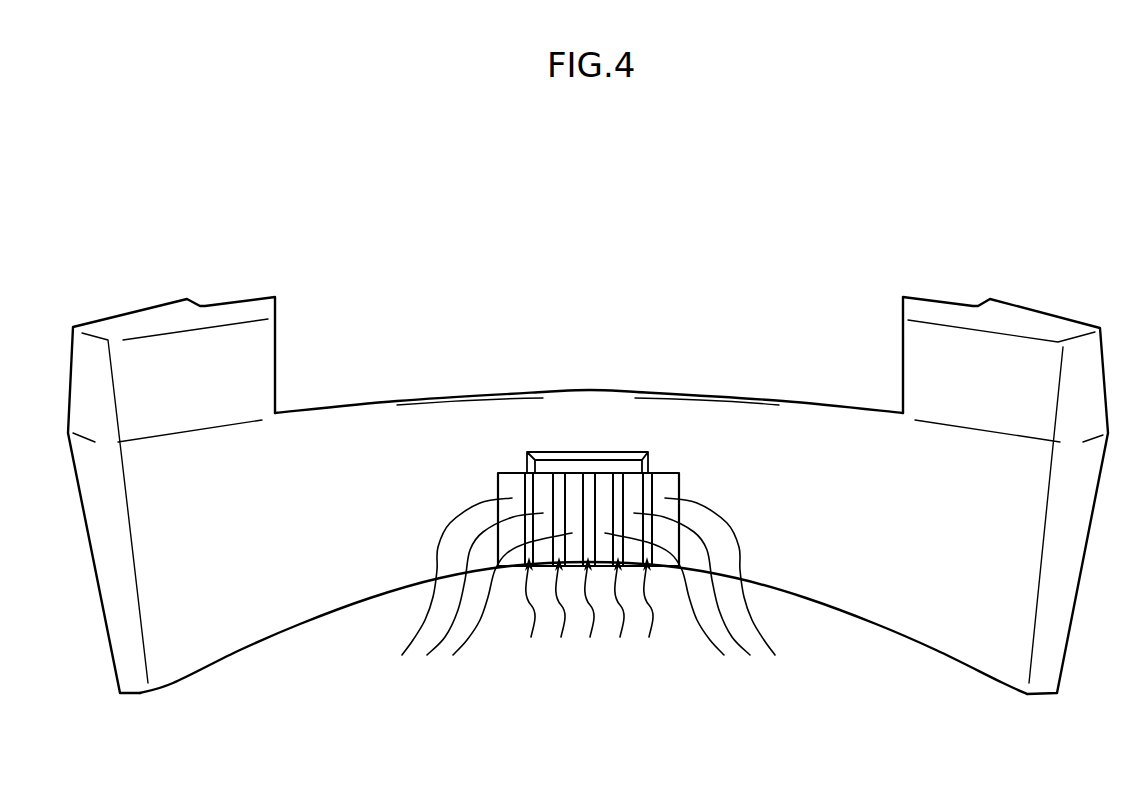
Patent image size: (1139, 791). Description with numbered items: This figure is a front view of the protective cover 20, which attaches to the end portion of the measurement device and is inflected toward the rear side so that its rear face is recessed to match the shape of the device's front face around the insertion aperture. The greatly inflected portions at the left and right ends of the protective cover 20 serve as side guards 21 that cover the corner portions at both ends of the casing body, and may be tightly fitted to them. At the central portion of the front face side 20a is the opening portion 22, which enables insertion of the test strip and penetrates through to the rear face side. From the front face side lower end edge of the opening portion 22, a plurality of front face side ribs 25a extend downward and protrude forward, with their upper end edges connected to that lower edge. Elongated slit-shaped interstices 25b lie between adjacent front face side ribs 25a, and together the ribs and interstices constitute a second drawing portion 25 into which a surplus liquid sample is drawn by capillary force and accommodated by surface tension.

The protective cover 20 is at (804, 257).
The front face side 20a is at (947, 612).
The side guard 21 is at (153, 322).
The opening portion 22 is at (590, 464).
The second drawing portion 25 is at (378, 718).
The front face side rib 25a is at (378, 655).
The interstice 25b is at (508, 637).